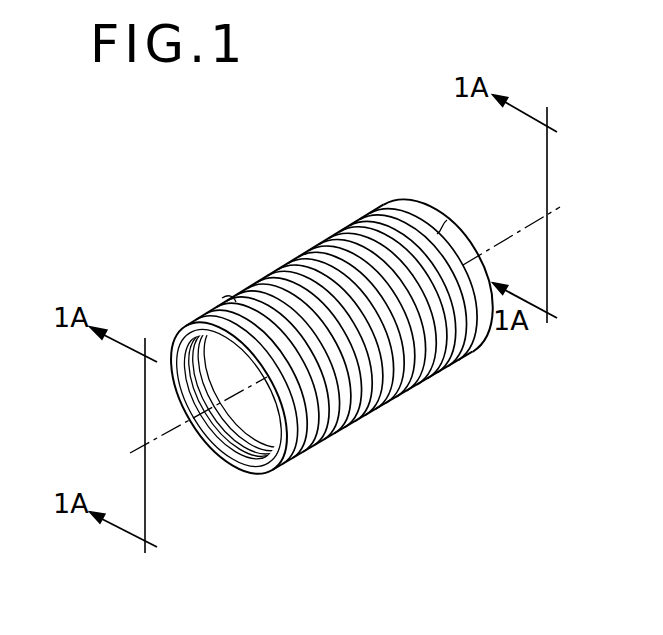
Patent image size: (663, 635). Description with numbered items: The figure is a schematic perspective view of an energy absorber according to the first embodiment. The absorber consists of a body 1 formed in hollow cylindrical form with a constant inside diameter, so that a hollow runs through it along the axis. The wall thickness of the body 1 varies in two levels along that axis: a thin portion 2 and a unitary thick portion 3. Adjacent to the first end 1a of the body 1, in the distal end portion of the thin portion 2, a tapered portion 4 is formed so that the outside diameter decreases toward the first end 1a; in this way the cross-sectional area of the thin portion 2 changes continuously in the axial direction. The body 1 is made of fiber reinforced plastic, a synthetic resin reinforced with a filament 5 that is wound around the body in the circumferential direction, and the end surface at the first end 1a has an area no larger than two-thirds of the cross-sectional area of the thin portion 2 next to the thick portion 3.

The body 1 is at (283, 232).
The first end 1a is at (220, 461).
The thin portion 2 is at (326, 430).
The thick portion 3 is at (477, 273).
The tapered portion 4 is at (198, 323).
The filament 5 is at (228, 296).